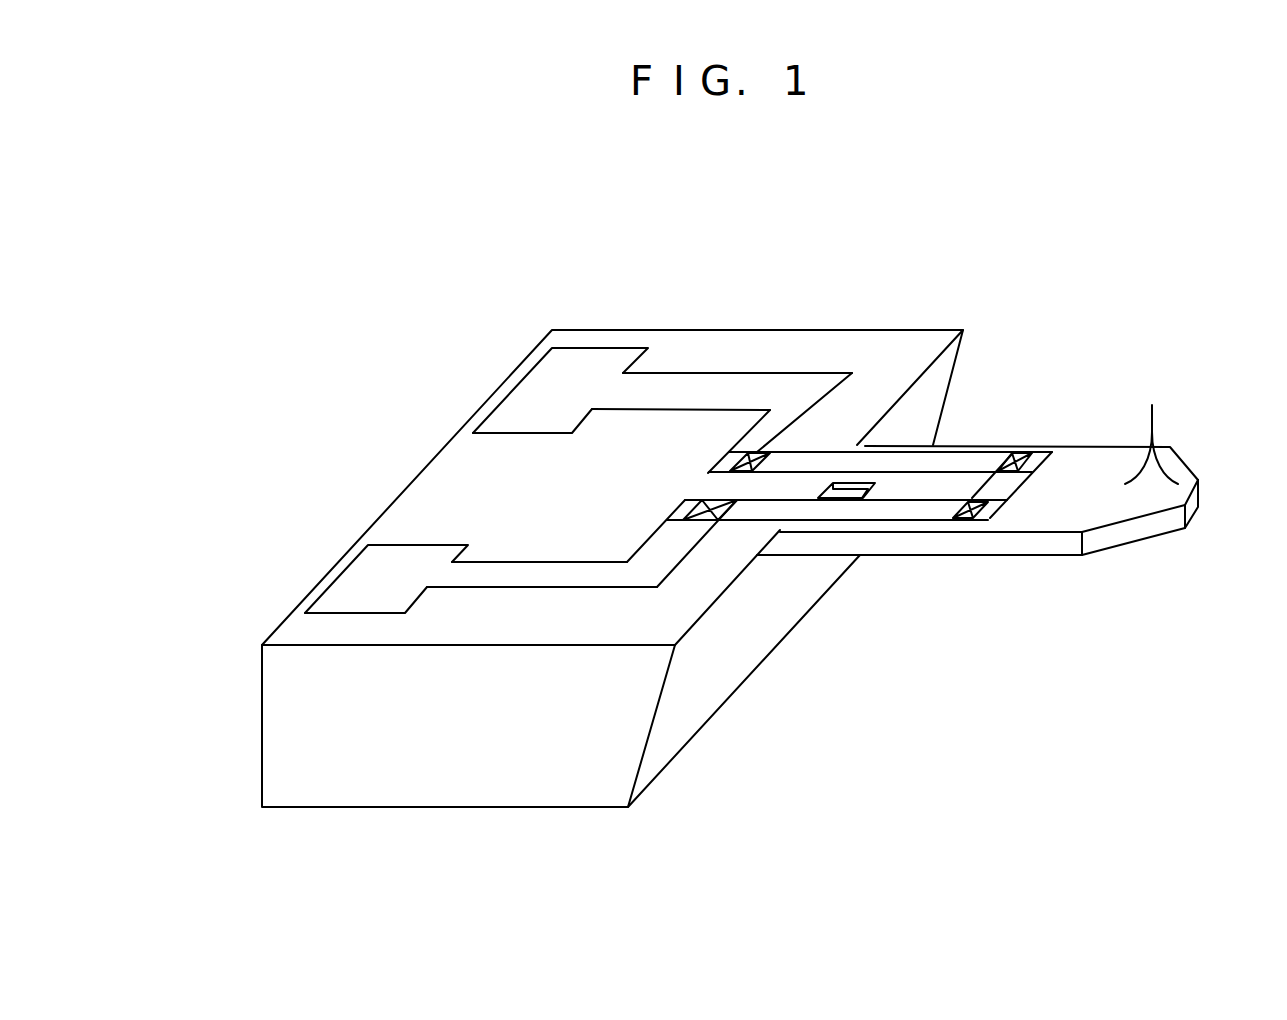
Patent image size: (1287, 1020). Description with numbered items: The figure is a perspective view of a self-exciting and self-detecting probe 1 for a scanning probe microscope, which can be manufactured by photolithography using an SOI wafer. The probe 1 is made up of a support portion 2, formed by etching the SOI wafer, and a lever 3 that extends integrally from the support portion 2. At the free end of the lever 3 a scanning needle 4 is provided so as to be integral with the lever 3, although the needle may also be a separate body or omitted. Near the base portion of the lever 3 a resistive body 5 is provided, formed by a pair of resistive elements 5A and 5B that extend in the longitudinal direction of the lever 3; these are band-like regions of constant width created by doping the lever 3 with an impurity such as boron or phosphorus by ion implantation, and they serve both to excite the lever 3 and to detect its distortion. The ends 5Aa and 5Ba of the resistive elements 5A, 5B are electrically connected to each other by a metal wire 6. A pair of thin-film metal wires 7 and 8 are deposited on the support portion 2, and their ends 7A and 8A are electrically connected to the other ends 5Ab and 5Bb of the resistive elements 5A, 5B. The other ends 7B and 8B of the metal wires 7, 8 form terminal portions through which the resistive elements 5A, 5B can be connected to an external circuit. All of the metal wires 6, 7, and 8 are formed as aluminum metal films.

The probe 1 is at (937, 138).
The support portion 2 is at (457, 472).
The lever 3 is at (1045, 515).
The scanning needle 4 is at (1153, 420).
The resistive body 5 is at (868, 488).
The resistive element 5A is at (889, 448).
The end of resistive element 5Aa is at (1030, 462).
The other end of resistive element 5Ab is at (776, 452).
The resistive element 5B is at (842, 603).
The end of resistive element 5Ba is at (978, 515).
The other end of resistive element 5Bb is at (713, 513).
The metal wire 6 is at (1005, 487).
The metal wire 7 is at (641, 371).
The end of metal wire 7A is at (755, 448).
The other end of metal wire 7B is at (528, 407).
The metal wire 8 is at (506, 685).
The end of metal wire 8A is at (679, 512).
The other end of metal wire 8B is at (358, 583).